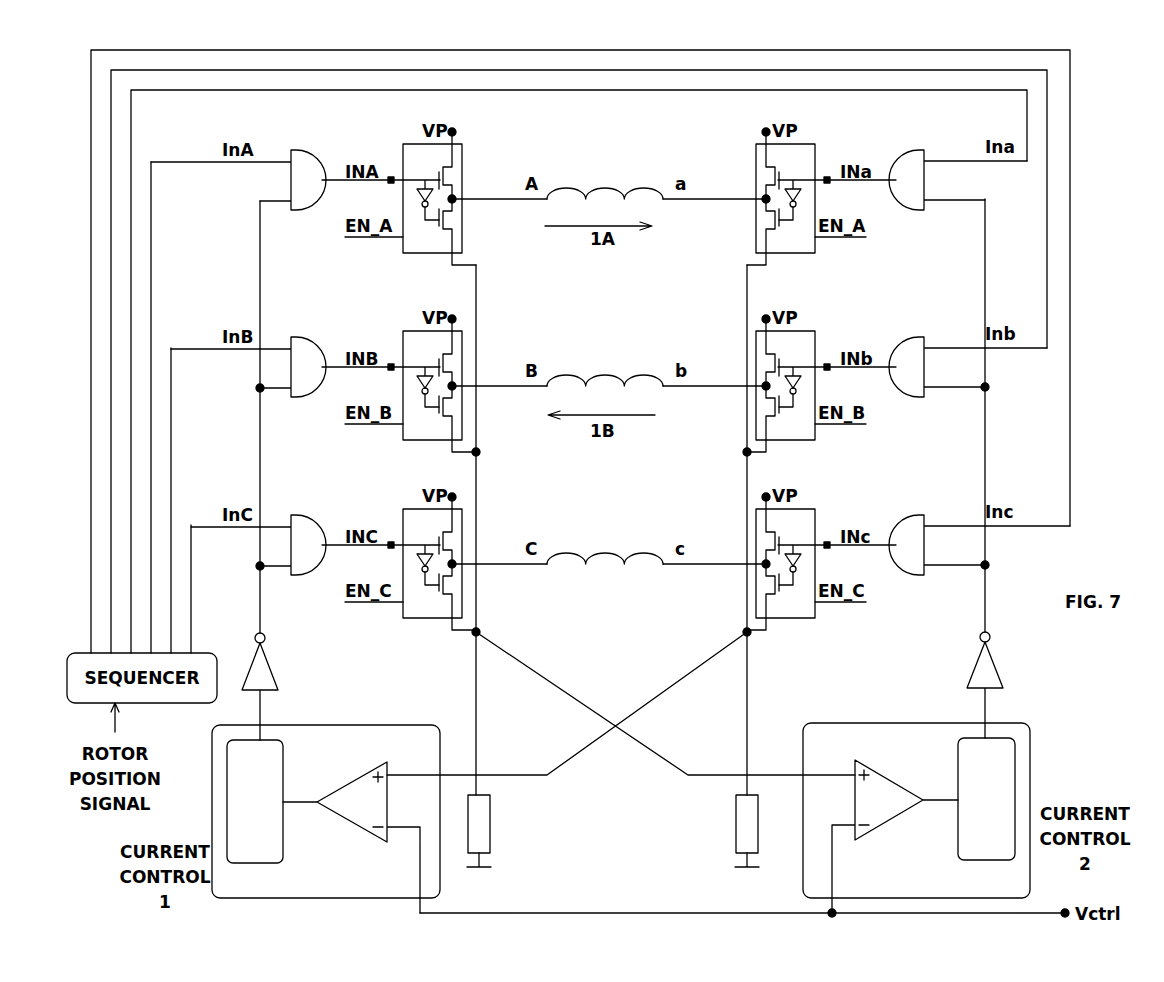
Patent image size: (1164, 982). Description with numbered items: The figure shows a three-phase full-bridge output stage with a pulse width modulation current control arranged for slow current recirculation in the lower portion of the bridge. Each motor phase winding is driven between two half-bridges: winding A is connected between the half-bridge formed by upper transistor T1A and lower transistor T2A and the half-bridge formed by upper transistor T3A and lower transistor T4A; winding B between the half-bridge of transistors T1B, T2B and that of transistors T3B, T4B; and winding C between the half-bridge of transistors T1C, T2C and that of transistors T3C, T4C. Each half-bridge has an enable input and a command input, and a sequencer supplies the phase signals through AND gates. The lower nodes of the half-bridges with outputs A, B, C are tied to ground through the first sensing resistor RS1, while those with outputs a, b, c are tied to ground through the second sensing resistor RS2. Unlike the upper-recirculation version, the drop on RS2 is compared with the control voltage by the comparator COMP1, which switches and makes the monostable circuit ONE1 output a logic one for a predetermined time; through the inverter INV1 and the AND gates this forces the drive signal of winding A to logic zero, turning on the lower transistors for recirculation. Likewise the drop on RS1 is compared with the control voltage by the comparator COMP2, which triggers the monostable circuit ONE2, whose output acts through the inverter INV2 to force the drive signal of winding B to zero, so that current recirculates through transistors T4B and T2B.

The MOS transistor T1A is at (473, 165).
The MOS transistor T2A is at (473, 232).
The MOS transistor T3A is at (745, 165).
The MOS transistor T4A is at (745, 232).
The MOS transistor T1B is at (472, 352).
The MOS transistor T2B is at (472, 419).
The MOS transistor T3B is at (745, 352).
The MOS transistor T4B is at (745, 419).
The MOS transistor T1C is at (472, 530).
The MOS transistor T2C is at (472, 597).
The MOS transistor T3C is at (745, 530).
The MOS transistor T4C is at (745, 597).
The inverter INV1 is at (286, 470).
The inverter INV2 is at (1009, 468).
The comparator COMP1 is at (351, 832).
The comparator COMP2 is at (895, 832).
The monostable circuit ONE1 is at (255, 801).
The monostable circuit ONE2 is at (986, 799).
The sensing resistor RS1 is at (502, 831).
The sensing resistor RS2 is at (725, 831).